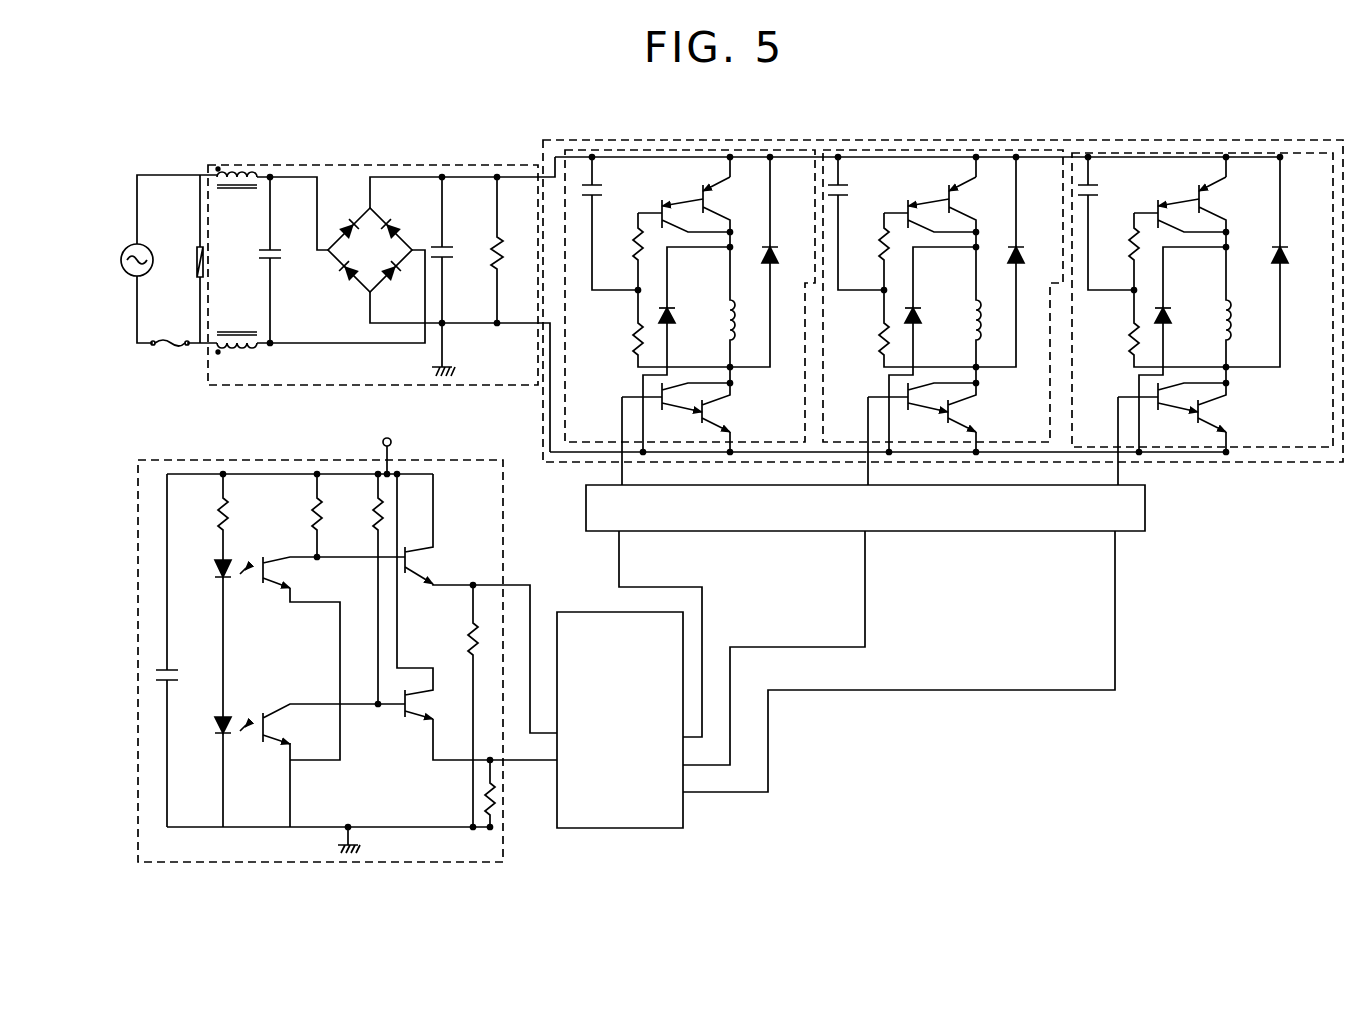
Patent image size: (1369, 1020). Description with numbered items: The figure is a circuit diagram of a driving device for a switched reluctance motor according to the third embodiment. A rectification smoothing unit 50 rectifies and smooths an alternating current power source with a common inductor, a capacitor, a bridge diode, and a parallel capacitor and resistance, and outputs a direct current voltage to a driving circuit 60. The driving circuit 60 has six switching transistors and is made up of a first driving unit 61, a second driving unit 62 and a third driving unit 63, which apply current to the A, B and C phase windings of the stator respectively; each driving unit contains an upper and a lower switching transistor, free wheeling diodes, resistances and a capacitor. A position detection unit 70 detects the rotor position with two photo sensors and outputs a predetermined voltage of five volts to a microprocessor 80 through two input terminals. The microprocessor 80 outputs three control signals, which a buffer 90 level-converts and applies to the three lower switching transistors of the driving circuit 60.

The rectification smoothing unit 50 is at (263, 386).
The driving circuit 60 is at (853, 140).
The first driving unit 61 is at (657, 150).
The second driving unit 62 is at (995, 152).
The third driving unit 63 is at (1182, 153).
The position detection unit 70 is at (425, 460).
The microprocessor 80 is at (603, 612).
The buffer 90 is at (1145, 510).